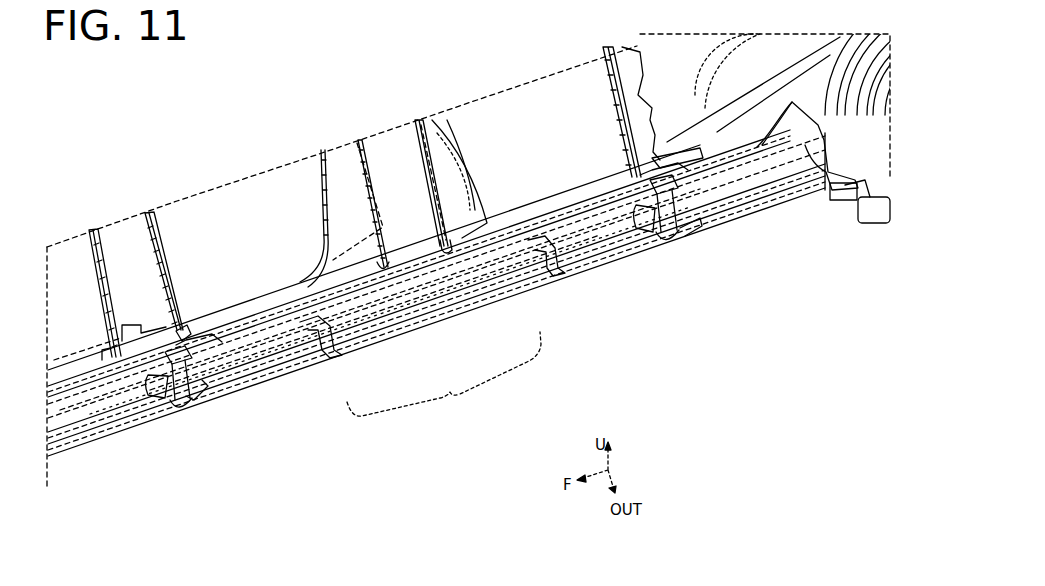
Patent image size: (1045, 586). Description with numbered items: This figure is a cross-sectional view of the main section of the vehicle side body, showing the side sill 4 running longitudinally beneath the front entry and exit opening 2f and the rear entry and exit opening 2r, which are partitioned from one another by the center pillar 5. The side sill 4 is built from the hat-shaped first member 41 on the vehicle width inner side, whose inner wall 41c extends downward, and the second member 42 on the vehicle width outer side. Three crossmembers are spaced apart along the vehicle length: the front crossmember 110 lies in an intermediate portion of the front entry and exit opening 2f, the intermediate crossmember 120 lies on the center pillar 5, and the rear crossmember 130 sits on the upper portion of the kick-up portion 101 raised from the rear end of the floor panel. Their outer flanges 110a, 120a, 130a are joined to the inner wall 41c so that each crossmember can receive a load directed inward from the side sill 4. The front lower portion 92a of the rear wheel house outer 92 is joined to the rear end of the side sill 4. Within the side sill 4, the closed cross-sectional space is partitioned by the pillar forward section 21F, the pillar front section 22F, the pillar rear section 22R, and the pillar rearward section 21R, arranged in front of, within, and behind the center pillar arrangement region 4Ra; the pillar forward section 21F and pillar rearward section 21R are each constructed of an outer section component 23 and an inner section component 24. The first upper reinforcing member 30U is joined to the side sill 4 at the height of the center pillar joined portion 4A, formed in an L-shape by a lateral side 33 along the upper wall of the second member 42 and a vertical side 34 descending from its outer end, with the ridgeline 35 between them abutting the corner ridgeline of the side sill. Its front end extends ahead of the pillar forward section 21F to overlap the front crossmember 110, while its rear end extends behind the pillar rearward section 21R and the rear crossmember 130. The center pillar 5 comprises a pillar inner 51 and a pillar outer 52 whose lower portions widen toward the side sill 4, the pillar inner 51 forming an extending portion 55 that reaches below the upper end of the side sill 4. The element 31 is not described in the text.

The front entry and exit opening 2f is at (254, 211).
The rear entry and exit opening 2r is at (529, 131).
The side sill 4 is at (270, 294).
The center pillar joined portion 4A is at (322, 249).
The center pillar arrangement region 4Ra is at (450, 397).
The center pillar 5 is at (453, 146).
The pillar forward section 21F is at (193, 412).
The pillar rearward section 21R is at (647, 248).
The pillar front section 22F is at (342, 356).
The pillar rear section 22R is at (550, 283).
The outer section component 23 is at (199, 400).
The inner section component 24 is at (196, 337).
The first upper reinforcing member 30U is at (748, 208).
The wheel arch flange 31 is at (805, 106).
The lateral side 33 is at (274, 372).
The vertical side 34 is at (252, 383).
The ridgeline 35 is at (312, 352).
The first member 41 is at (69, 358).
The inner wall 41c is at (553, 198).
The second member 42 is at (100, 440).
The pillar inner 51 is at (402, 330).
The pillar outer 52 is at (465, 188).
The extending portion 55 is at (467, 281).
The rear wheel house outer 92 is at (872, 192).
The front lower portion 92a is at (830, 198).
The kick-up portion 101 is at (603, 127).
The front crossmember 110 is at (168, 252).
The flange 110a is at (195, 318).
The intermediate crossmember 120 is at (358, 183).
The flange 120a is at (470, 228).
The rear crossmember 130 is at (658, 125).
The flange 130a is at (696, 157).